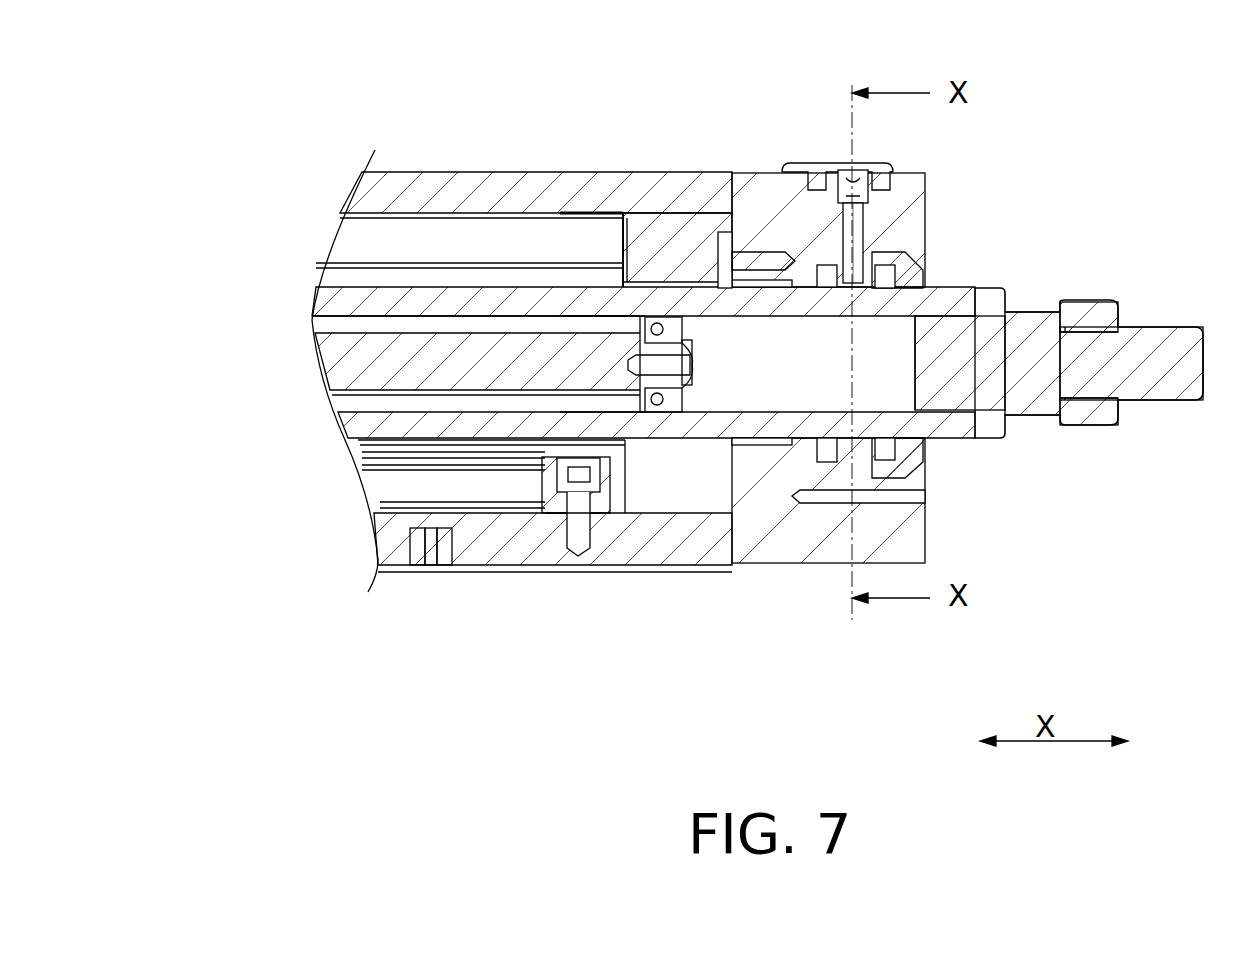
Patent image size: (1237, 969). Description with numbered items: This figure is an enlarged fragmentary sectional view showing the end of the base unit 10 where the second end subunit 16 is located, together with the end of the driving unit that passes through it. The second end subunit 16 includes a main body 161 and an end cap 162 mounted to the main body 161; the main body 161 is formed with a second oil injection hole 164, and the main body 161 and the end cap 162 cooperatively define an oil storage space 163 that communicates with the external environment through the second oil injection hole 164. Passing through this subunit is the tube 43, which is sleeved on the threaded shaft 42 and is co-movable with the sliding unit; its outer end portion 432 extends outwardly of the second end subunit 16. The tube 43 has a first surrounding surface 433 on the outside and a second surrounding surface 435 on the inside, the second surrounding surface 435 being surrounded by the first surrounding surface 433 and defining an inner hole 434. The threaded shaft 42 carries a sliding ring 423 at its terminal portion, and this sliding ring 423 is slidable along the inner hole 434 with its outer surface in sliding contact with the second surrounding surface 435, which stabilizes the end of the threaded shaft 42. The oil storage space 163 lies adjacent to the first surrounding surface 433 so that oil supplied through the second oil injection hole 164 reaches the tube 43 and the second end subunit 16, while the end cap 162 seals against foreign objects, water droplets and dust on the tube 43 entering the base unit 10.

The base unit 10 is at (460, 572).
The second end subunit 16 is at (786, 535).
The main body 161 is at (828, 368).
The end cap 162 is at (905, 275).
The oil storage space 163 is at (882, 278).
The second oil injection hole 164 is at (858, 232).
The threaded shaft 42 is at (427, 377).
The sliding ring 423 is at (670, 320).
The tube 43 is at (555, 302).
The outer end portion 432 is at (960, 288).
The first surrounding surface 433 is at (445, 292).
The inner hole 434 is at (370, 325).
The second surrounding surface 435 is at (587, 327).